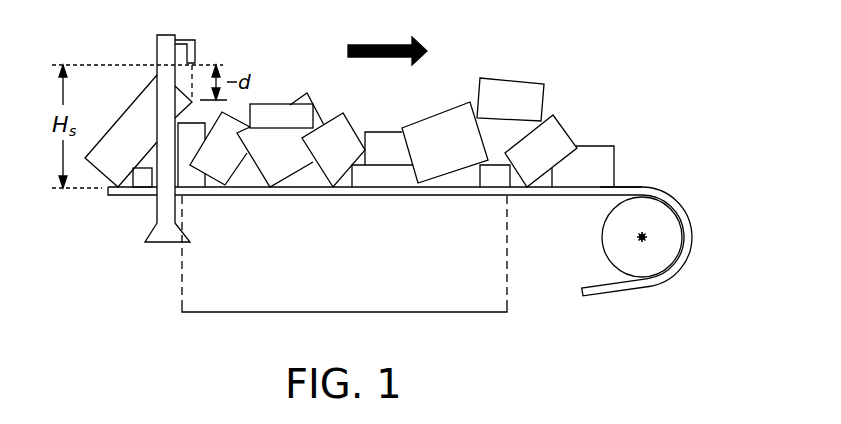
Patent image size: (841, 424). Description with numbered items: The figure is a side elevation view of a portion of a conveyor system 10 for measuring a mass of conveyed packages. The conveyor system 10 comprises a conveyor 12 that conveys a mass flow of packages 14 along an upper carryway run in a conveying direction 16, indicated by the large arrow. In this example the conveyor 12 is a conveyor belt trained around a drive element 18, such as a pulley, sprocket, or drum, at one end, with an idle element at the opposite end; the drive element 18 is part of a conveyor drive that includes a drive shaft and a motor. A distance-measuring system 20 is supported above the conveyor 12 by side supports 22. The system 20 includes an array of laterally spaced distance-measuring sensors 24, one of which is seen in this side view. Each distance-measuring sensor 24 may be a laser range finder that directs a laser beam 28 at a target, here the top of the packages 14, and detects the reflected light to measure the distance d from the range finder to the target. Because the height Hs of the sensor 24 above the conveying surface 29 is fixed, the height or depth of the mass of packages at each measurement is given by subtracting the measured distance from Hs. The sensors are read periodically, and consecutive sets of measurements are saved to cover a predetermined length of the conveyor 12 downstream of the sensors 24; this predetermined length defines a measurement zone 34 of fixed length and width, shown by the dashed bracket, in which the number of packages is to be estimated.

The conveyor system 10 is at (629, 51).
The conveyor 12 is at (523, 195).
The packages 14 is at (417, 122).
The conveying direction 16 is at (385, 45).
The drive element 18 is at (663, 248).
The distance-measuring system 20 is at (177, 35).
The side supports 22 is at (164, 208).
The distance-measuring sensor 24 is at (195, 56).
The laser beam 28 is at (192, 78).
The conveying surface 29 is at (623, 187).
The measurement zone 34 is at (342, 312).